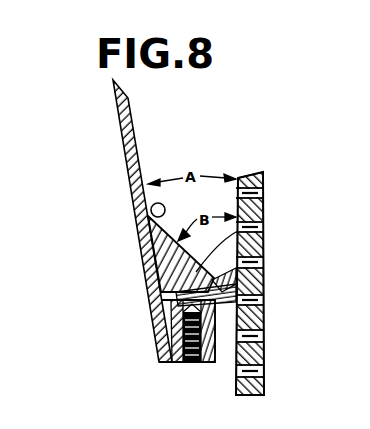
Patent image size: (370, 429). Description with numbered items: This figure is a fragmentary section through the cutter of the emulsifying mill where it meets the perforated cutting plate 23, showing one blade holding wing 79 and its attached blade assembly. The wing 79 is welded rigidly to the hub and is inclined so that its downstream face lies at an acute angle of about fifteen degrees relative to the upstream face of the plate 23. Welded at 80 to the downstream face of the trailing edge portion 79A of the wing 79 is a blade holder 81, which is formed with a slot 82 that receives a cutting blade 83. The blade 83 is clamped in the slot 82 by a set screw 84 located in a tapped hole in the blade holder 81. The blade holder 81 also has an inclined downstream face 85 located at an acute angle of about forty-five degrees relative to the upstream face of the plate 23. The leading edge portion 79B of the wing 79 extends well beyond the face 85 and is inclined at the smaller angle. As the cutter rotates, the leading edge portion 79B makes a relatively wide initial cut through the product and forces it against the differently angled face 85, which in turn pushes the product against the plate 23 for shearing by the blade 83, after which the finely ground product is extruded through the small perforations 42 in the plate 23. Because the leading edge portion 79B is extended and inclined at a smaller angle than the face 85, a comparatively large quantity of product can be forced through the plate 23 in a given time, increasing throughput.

The perforated cutting plate 23 is at (262, 178).
The perforations 42 is at (248, 267).
The blade holding wing 79 is at (124, 186).
The trailing edge portion 79A is at (150, 283).
The leading edge portion 79B is at (118, 118).
The weld 80 is at (149, 218).
The blade holder 81 is at (170, 260).
The slot 82 is at (172, 318).
The cutting blade 83 is at (265, 318).
The set screw 84 is at (168, 346).
The inclined downstream face 85 is at (264, 228).